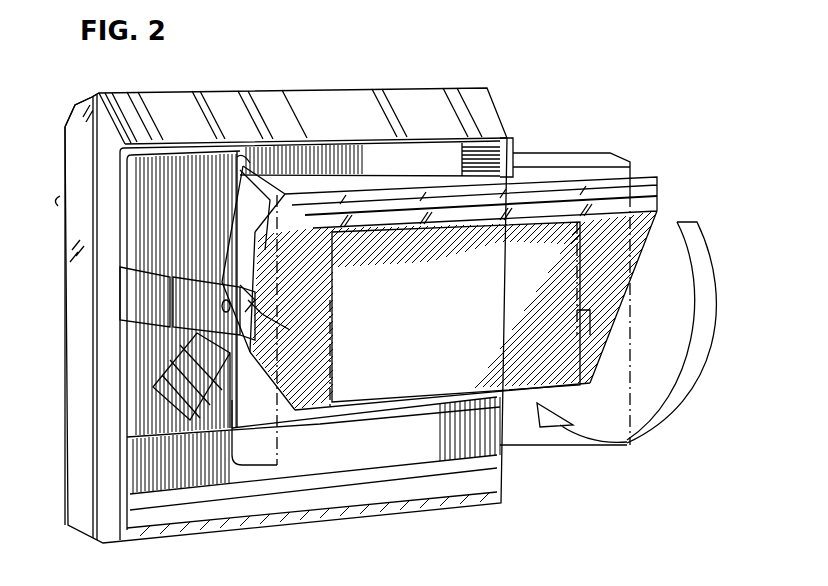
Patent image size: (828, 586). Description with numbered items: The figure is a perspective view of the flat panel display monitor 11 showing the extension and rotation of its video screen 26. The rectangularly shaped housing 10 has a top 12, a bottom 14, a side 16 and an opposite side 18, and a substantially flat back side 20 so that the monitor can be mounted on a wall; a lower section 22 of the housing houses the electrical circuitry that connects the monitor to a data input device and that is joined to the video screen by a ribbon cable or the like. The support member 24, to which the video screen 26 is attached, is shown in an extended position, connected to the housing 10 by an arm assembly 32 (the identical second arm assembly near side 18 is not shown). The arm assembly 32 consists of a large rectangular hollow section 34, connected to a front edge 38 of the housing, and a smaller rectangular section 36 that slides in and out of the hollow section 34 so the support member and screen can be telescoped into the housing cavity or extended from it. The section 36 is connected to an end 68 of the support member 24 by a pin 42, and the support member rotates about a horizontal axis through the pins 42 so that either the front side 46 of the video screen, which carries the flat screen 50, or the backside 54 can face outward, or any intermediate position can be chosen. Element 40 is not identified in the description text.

The housing 10 is at (82, 130).
The flat panel display monitor 11 is at (104, 88).
The top 12 is at (343, 88).
The bottom 14 is at (420, 505).
The side 16 is at (90, 231).
The side 18 is at (513, 140).
The back side 20 is at (63, 177).
The lower section 22 is at (213, 476).
The support member 24 is at (236, 148).
The video screen 26 is at (276, 160).
The arm assembly 32 is at (243, 296).
The hollow section 34 is at (155, 311).
The section 36 is at (212, 321).
The front edge 38 is at (212, 146).
The lower support 40 is at (212, 375).
The pin 42 is at (277, 355).
The front side 46 is at (540, 440).
The screen 50 is at (560, 358).
The backside 54 is at (262, 314).
The end 68 is at (263, 250).